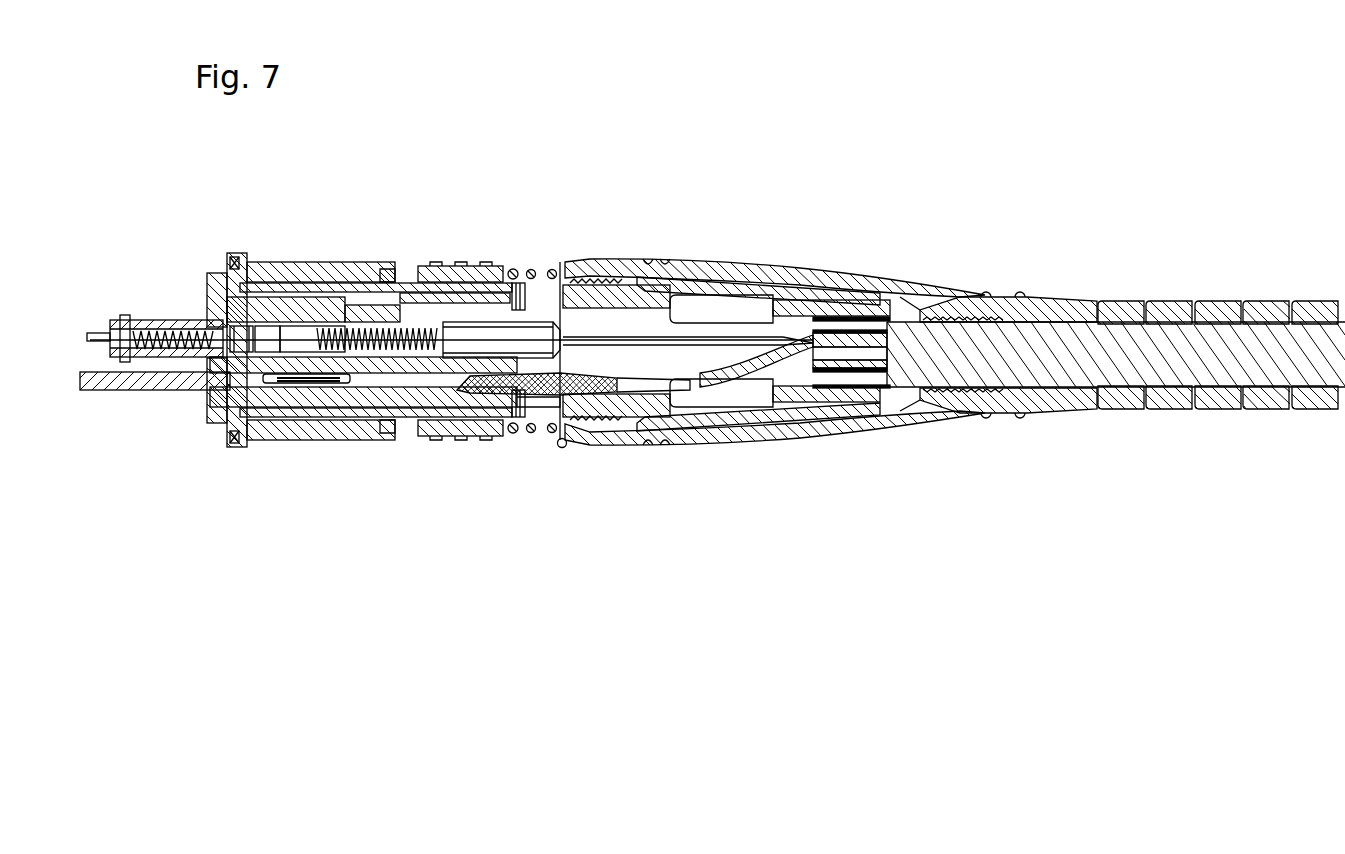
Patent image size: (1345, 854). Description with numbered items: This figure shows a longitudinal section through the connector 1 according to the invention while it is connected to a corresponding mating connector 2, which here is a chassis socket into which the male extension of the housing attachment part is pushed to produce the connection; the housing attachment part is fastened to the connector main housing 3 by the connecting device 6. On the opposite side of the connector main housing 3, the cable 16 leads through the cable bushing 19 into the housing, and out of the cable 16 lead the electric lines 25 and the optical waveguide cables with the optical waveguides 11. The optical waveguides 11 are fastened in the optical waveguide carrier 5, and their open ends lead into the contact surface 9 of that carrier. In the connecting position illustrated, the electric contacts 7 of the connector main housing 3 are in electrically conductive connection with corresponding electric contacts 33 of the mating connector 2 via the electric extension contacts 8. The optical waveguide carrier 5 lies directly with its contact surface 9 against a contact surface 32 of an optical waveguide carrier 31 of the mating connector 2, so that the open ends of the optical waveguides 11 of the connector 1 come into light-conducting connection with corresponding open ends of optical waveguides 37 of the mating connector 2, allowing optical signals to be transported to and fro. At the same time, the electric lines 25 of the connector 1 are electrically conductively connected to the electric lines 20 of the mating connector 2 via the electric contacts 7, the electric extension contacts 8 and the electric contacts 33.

The connector 1 is at (910, 181).
The mating connector 2 is at (264, 272).
The connector main housing 3 is at (927, 415).
The optical waveguide carrier 5 is at (305, 338).
The connecting device 6 is at (597, 283).
The electric contacts 7 is at (590, 383).
The electric extension contacts 8 is at (398, 380).
The contact surface 9 is at (280, 337).
The optical waveguides 11 is at (475, 340).
The cable 16 is at (1247, 352).
The cable bushing 19 is at (1172, 398).
The electric lines of the mating connector 20 is at (127, 385).
The electric lines 25 is at (762, 365).
The optical waveguide carrier of the mating connector 31 is at (250, 340).
The contact surface of the mating connector 32 is at (213, 400).
The electric contacts of the mating connector 33 is at (290, 383).
The optical waveguides of the mating connector 37 is at (95, 337).